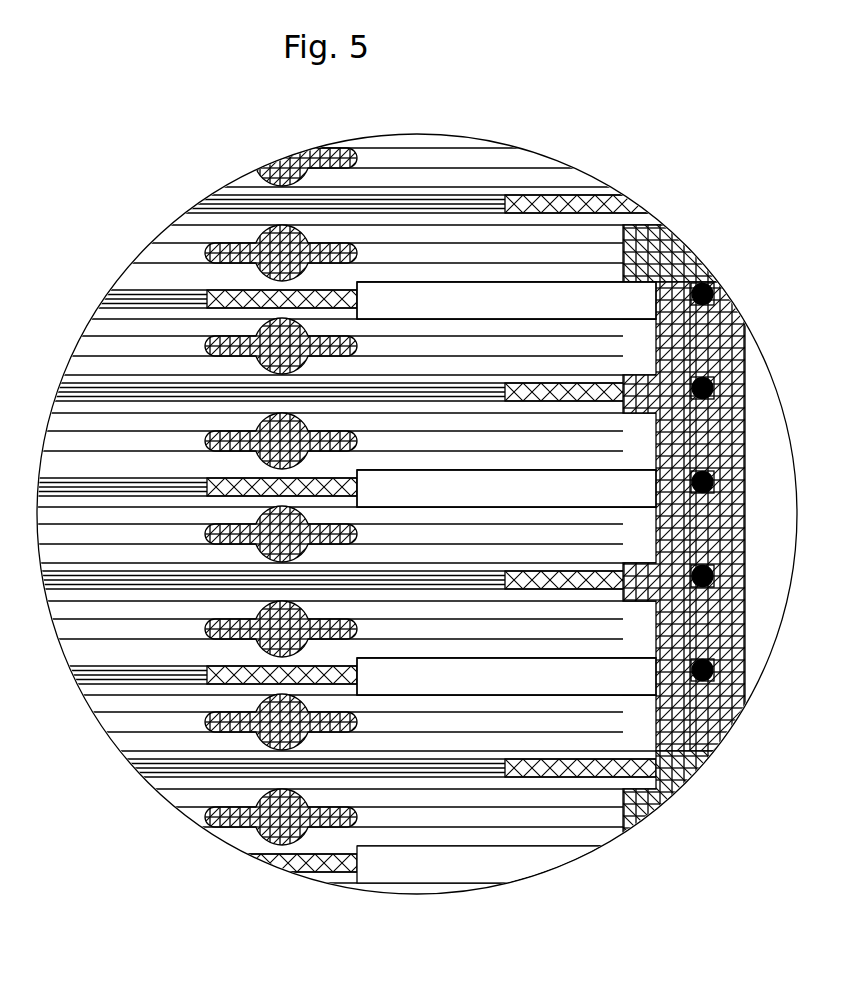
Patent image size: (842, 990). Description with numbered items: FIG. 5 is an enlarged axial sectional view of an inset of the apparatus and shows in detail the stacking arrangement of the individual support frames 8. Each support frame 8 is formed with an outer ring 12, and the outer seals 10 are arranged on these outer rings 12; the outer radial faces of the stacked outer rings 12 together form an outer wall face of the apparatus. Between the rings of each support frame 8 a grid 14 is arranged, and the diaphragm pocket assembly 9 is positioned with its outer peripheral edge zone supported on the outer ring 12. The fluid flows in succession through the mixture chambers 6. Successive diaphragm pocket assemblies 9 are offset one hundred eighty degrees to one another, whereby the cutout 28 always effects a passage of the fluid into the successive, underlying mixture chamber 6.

The mixture chamber 6 is at (419, 312).
The support frame 8 is at (516, 272).
The diaphragm pocket assembly 9 is at (46, 485).
The outer seal 10 is at (705, 282).
The outer ring 12 is at (738, 488).
The grid 14 is at (275, 247).
The cutout 28 is at (560, 312).